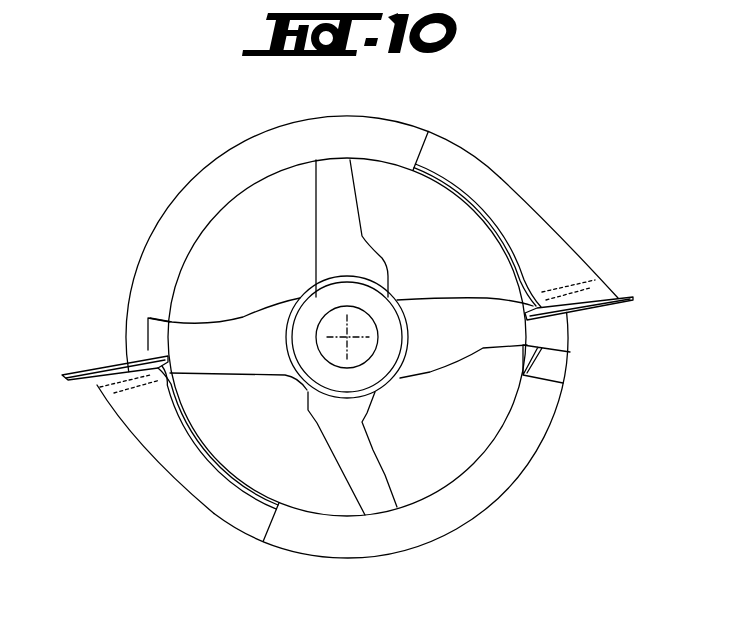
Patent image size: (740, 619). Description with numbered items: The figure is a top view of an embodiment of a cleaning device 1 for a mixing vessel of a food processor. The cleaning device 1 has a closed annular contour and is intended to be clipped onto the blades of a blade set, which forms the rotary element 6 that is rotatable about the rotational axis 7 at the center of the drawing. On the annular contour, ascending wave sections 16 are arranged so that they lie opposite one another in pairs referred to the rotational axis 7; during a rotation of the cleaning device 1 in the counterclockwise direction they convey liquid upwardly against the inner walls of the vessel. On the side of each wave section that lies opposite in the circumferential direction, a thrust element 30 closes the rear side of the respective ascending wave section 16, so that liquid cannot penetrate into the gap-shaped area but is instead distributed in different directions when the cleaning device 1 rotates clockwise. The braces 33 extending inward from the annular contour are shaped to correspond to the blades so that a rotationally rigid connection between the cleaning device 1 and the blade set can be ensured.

The cleaning device 1 is at (518, 140).
The rotary element 6 is at (382, 308).
The rotational axis 7 is at (344, 332).
The ascending wave sections 16 is at (96, 382).
The thrust element 30 is at (105, 360).
The braces 33 is at (468, 330).